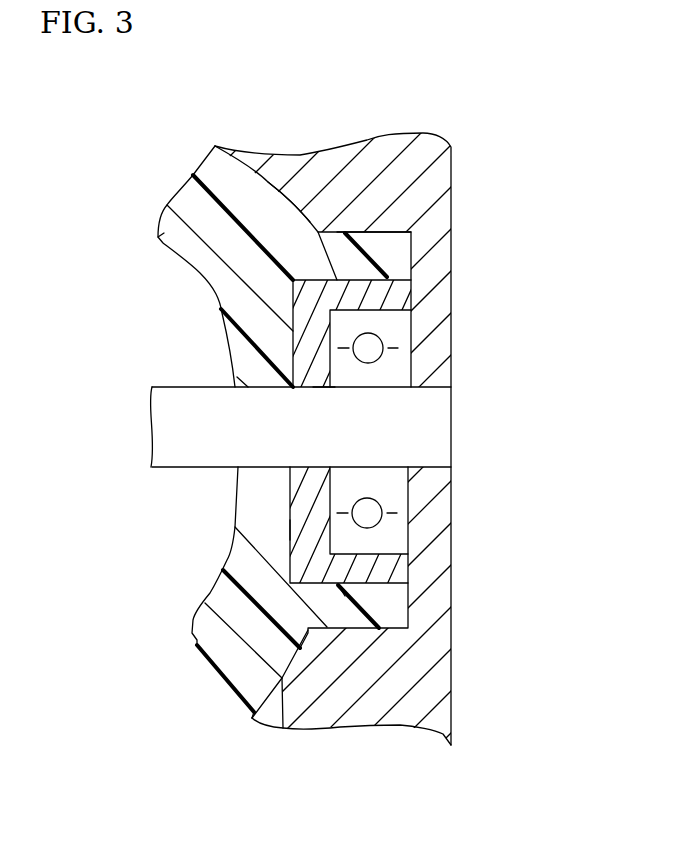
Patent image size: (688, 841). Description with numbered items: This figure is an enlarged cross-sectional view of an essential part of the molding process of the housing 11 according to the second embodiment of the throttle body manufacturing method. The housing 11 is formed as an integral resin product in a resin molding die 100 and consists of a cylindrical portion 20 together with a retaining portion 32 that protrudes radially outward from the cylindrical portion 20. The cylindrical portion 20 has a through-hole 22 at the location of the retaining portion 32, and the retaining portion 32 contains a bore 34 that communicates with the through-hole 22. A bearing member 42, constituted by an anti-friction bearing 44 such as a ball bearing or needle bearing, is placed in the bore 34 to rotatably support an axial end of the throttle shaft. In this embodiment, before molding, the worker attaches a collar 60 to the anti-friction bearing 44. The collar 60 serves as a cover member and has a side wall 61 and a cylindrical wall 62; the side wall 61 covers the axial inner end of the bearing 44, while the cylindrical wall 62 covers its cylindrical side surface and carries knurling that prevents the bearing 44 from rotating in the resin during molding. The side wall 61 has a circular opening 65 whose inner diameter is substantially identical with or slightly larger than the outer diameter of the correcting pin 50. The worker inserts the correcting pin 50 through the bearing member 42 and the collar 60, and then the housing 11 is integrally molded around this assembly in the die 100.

The resin molding die 100 is at (433, 222).
The correcting pin 50 is at (433, 430).
The cylindrical portion 20 is at (233, 667).
The through-hole 22 is at (255, 467).
The anti-friction bearing 44 is at (384, 337).
The bearing member 42 is at (408, 532).
The retaining portion 32 is at (383, 280).
The bore 34 is at (381, 240).
The housing 11 is at (272, 172).
The cylindrical wall 62 is at (380, 586).
The collar 60 is at (338, 585).
The side wall 61 is at (288, 517).
The circular opening 65 is at (313, 388).